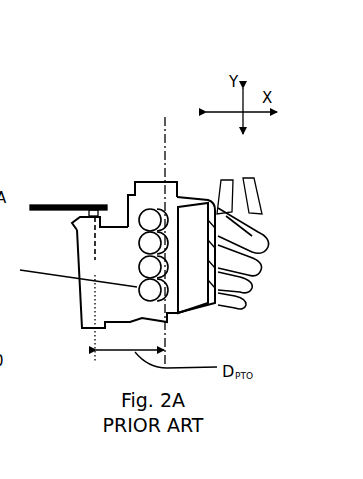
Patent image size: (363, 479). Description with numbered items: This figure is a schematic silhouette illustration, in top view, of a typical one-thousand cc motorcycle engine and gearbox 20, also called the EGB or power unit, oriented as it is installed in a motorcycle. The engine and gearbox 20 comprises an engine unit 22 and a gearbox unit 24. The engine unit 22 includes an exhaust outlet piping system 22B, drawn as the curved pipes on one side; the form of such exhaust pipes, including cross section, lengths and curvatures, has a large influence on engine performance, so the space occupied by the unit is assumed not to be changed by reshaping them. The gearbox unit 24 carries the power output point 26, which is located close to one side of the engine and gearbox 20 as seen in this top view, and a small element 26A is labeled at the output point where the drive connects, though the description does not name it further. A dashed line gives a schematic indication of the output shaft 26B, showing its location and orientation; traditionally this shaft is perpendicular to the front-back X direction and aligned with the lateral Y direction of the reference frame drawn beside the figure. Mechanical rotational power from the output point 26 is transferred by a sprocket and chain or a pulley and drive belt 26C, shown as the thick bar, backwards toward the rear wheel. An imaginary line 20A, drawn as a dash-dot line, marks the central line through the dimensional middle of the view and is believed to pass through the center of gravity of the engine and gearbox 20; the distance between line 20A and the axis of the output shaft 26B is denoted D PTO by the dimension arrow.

The motorcycle engine and gearbox 20 is at (172, 74).
The imaginary line 20A is at (161, 153).
The engine unit 22 is at (183, 178).
The exhaust outlet piping system 22B is at (257, 273).
The gearbox unit 24 is at (79, 303).
The power output point 26 is at (80, 218).
The latch pin 26A is at (94, 205).
The output shaft 26B is at (92, 248).
The drive belt 26C is at (42, 204).